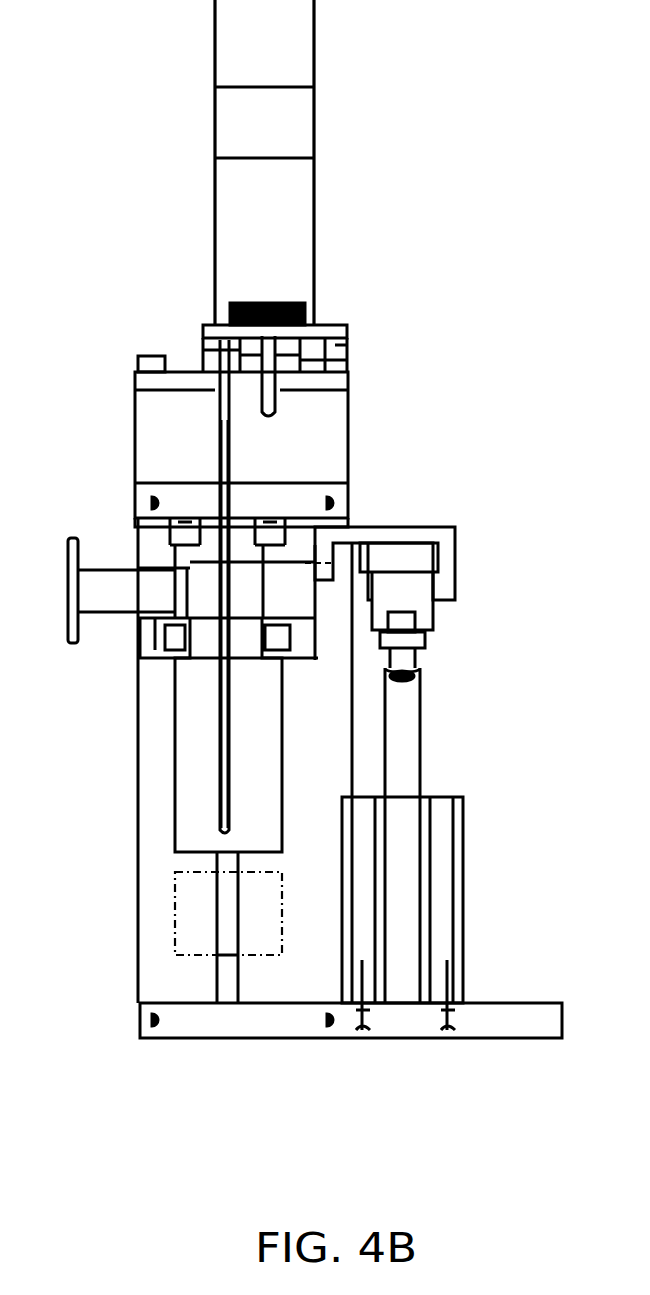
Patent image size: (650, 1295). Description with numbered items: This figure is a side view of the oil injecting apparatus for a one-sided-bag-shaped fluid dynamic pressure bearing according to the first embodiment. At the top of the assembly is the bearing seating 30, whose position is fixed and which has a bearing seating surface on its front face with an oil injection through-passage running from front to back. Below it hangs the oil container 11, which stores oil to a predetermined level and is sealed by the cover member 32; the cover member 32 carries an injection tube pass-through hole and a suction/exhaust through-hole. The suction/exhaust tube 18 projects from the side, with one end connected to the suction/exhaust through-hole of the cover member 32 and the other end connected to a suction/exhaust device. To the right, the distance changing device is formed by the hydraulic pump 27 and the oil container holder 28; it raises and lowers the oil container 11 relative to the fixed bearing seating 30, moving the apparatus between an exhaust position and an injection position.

The bearing seating 30 is at (204, 328).
The suction/exhaust tube 18 is at (103, 613).
The oil container holder 28 is at (390, 550).
The hydraulic pump 27 is at (437, 813).
The cover member 32 is at (227, 715).
The oil container 11 is at (193, 803).